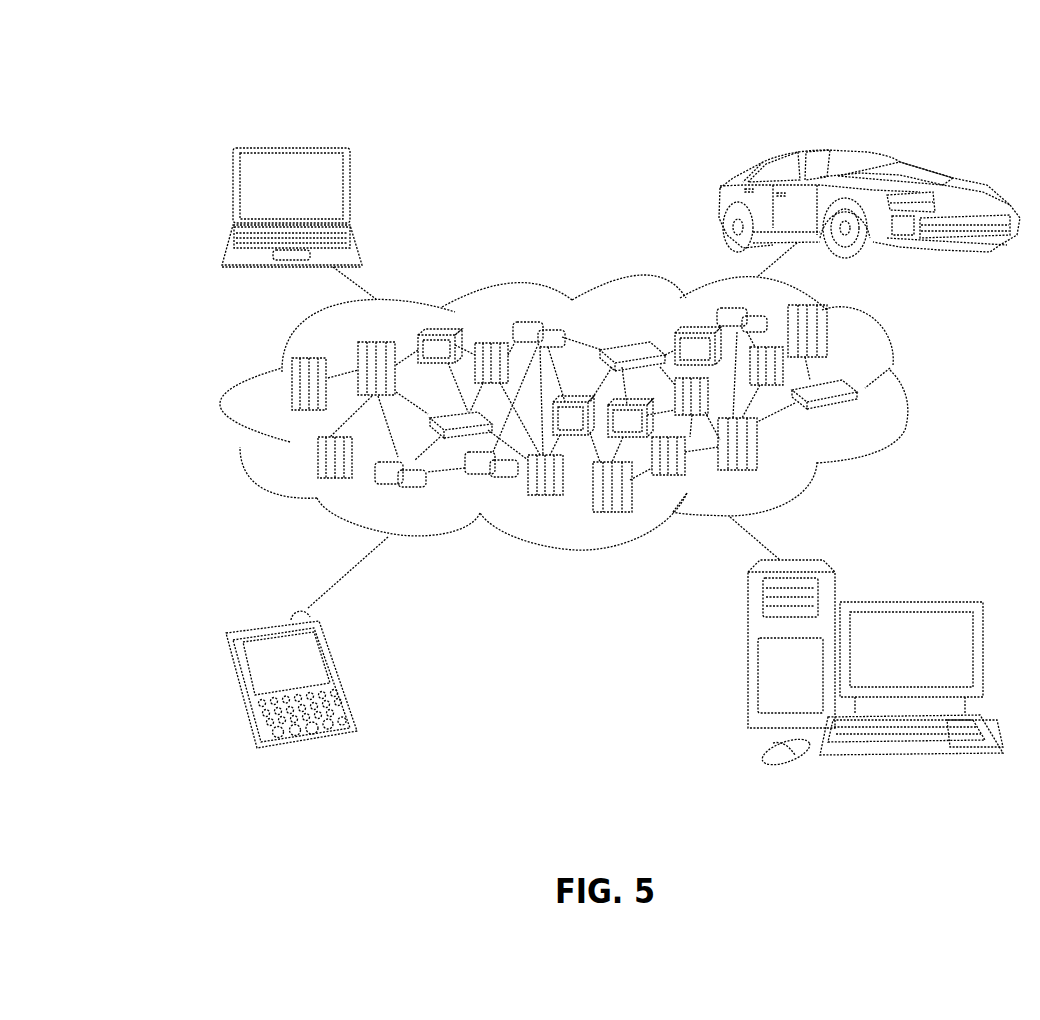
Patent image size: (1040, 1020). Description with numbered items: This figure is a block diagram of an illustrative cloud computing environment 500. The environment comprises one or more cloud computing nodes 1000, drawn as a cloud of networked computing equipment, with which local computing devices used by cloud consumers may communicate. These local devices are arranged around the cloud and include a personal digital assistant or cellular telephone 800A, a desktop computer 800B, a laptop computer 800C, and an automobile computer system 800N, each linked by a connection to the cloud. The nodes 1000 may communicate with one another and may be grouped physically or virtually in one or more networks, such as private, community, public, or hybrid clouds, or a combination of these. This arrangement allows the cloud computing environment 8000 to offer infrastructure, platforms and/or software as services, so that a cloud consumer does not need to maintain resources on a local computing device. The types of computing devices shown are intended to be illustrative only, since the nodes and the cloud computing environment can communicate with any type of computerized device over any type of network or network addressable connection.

The cloud computing environment 500 is at (169, 66).
The personal digital assistant or cellular telephone 800A is at (343, 672).
The desktop computer 800B is at (920, 587).
The laptop computer 800C is at (352, 192).
The automobile computer system 800N is at (722, 211).
The cloud computing environment 8000 is at (601, 412).
The cloud computing nodes 1000 is at (866, 416).